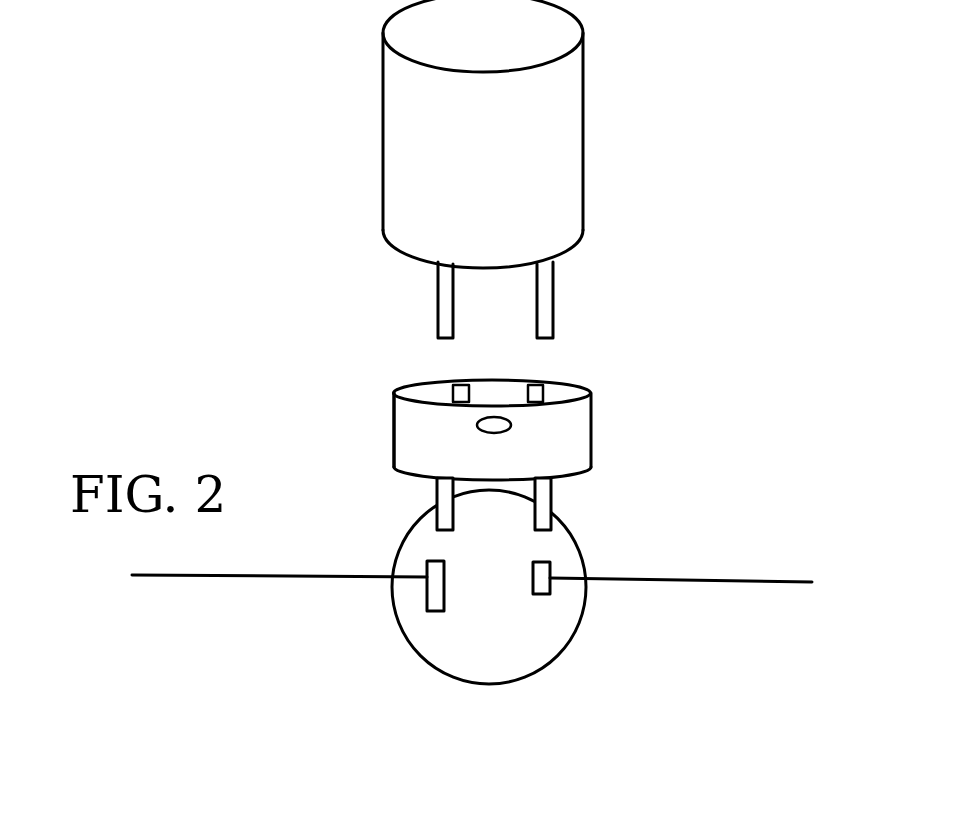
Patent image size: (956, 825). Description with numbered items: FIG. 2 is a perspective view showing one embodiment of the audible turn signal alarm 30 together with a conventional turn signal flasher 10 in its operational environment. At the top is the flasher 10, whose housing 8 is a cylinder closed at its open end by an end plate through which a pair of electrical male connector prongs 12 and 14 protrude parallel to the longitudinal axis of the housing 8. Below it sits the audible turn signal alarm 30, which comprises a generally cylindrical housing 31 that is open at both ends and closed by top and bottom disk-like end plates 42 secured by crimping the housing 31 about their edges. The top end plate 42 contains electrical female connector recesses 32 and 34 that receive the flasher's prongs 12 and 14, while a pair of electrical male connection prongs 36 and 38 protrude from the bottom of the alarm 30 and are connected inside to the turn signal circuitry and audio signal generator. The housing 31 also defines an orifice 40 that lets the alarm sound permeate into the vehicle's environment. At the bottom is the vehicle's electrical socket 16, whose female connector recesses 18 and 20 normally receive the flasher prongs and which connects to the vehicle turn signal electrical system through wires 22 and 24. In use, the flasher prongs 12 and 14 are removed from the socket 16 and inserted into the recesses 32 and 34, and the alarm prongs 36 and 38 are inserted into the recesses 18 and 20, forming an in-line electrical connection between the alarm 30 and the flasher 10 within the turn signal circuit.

The housing 8 is at (568, 130).
The turn signal flasher 10 is at (366, 175).
The electrical male connector prong 12 is at (552, 307).
The electrical male connector prong 14 is at (437, 320).
The electrical socket 16 is at (567, 563).
The electrical female connector recess 18 is at (427, 578).
The electrical female connector recess 20 is at (543, 596).
The wire 22 is at (353, 578).
The wire 24 is at (672, 582).
The audible turn signal alarm 30 is at (588, 433).
The housing 31 is at (392, 417).
The electrical female connector recess 32 is at (458, 382).
The electrical female connector recess 34 is at (527, 382).
The electrical male connection prong 36 is at (445, 514).
The electrical male connection prong 38 is at (552, 497).
The orifice 40 is at (515, 418).
The end plate 42 is at (505, 388).